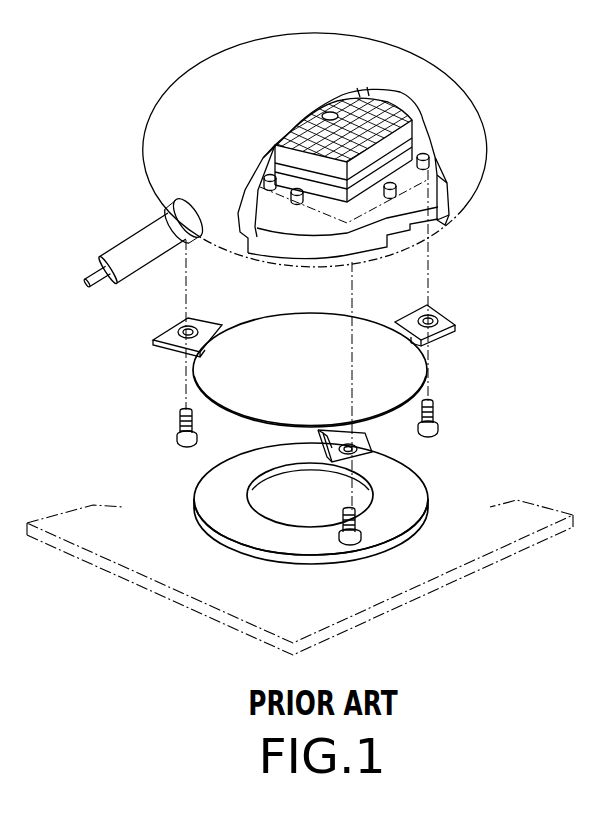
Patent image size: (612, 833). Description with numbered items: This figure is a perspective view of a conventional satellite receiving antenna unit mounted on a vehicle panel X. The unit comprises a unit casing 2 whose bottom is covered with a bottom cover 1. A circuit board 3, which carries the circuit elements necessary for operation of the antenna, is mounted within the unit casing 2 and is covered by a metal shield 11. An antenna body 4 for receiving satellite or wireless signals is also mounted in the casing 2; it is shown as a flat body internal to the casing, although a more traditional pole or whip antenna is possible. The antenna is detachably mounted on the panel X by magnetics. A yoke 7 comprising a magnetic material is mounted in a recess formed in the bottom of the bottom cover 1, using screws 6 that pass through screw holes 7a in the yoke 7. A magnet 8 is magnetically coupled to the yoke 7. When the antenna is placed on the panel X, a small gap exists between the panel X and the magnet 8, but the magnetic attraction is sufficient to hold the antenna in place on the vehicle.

The bottom cover 1 is at (420, 193).
The unit casing 2 is at (442, 97).
The circuit board 3 is at (257, 142).
The antenna body 4 is at (380, 102).
The metal shield 11 is at (417, 153).
The yoke 7 is at (410, 367).
The screw holes 7a is at (172, 337).
The screws 6 is at (178, 422).
The magnet 8 is at (208, 500).
The vehicle panel X is at (457, 565).